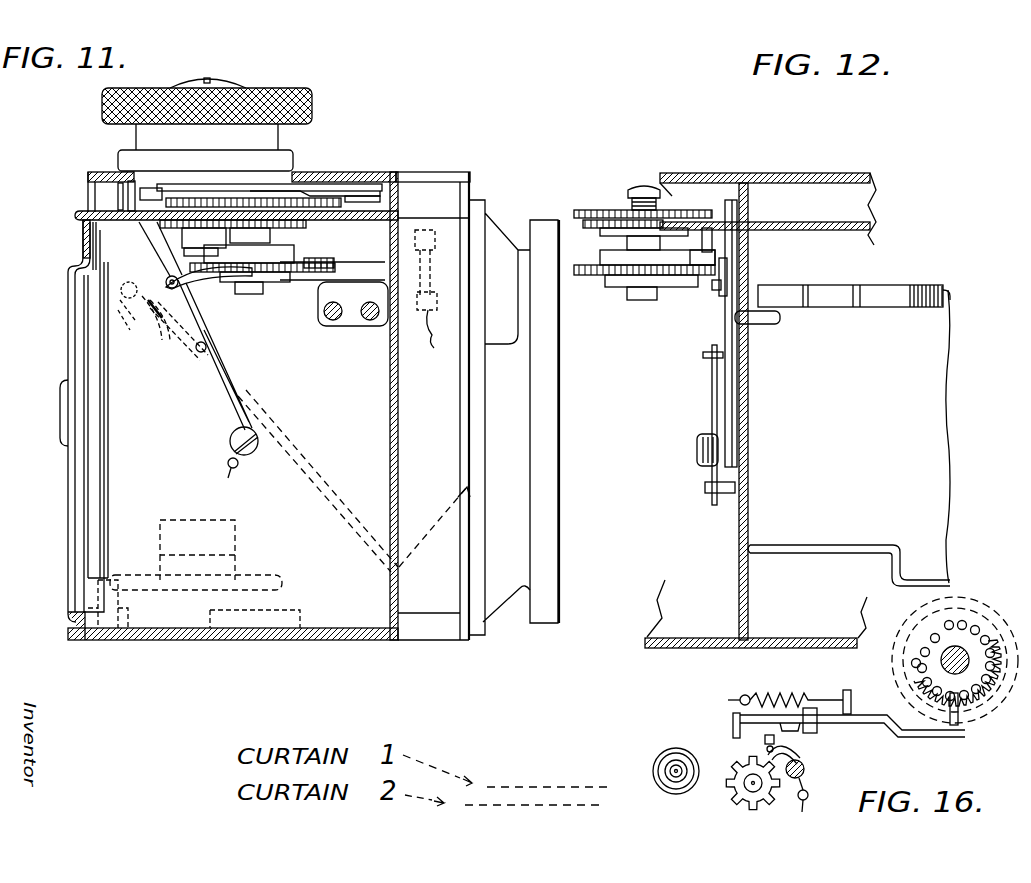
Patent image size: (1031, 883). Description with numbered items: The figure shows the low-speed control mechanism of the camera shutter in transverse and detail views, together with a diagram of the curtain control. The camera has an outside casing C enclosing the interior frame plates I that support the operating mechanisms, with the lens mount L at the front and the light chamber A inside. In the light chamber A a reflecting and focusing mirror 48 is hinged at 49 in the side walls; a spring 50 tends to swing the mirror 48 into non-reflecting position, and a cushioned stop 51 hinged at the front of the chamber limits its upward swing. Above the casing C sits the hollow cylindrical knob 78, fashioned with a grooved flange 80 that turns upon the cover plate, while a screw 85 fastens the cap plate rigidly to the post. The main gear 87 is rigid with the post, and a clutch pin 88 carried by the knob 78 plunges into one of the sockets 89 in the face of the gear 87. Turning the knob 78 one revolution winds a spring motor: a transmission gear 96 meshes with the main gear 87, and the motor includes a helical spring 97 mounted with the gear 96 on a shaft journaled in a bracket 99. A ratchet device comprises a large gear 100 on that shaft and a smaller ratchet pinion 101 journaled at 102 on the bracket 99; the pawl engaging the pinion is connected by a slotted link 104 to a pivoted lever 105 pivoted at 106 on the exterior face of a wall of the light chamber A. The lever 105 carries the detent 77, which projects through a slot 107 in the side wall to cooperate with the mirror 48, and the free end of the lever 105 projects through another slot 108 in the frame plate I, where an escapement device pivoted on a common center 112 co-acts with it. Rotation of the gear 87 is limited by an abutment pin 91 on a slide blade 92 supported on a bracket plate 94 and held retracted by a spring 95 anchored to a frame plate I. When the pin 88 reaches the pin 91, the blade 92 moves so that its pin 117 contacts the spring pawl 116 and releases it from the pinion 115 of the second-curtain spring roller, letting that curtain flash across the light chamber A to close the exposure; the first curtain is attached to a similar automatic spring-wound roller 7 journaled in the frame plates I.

In FIG. 11, the knob 78 is at (328, 70).
In FIG. 11, the screw 85 is at (226, 67).
In FIG. 11, the grooved flange 80 is at (124, 151).
In FIG. 11, the casing C is at (356, 178).
In FIG. 12, the casing C is at (780, 177).
In FIG. 11, the frame plates I is at (300, 216).
In FIG. 12, the frame plates I is at (834, 226).
In FIG. 11, the mirror hinge 49 is at (80, 292).
In FIG. 12, the mirror hinge 49 is at (837, 275).
In FIG. 11, the abutment pin 91 is at (118, 194).
In FIG. 16, the abutment pin 91 is at (947, 736).
In FIG. 11, the common center 112 is at (349, 186).
In FIG. 11, the transmission gear 96 is at (306, 224).
In FIG. 12, the transmission gear 96 is at (578, 211).
In FIG. 11, the helical spring 97 is at (295, 256).
In FIG. 12, the helical spring 97 is at (616, 236).
In FIG. 11, the large gear 100 is at (292, 288).
In FIG. 12, the large gear 100 is at (586, 282).
In FIG. 11, the ratchet pinion 101 is at (320, 275).
In FIG. 11, the bracket 99 is at (367, 318).
In FIG. 12, the bracket 99 is at (690, 278).
In FIG. 11, the slotted link 104 is at (168, 288).
In FIG. 12, the slotted link 104 is at (724, 278).
In FIG. 11, the detent 77 is at (153, 303).
In FIG. 12, the detent 77 is at (779, 322).
In FIG. 11, the pivoted lever 105 is at (214, 392).
In FIG. 12, the pivoted lever 105 is at (737, 409).
In FIG. 11, the pivot 106 is at (229, 441).
In FIG. 12, the pivot 106 is at (697, 449).
In FIG. 11, the slot 107 is at (214, 328).
In FIG. 12, the slot 107 is at (752, 330).
In FIG. 11, the cushioned stop 51 is at (425, 300).
In FIG. 11, the reflecting and focusing mirror 48 is at (326, 472).
In FIG. 12, the reflecting and focusing mirror 48 is at (849, 544).
In FIG. 11, the lens mount L is at (514, 431).
In FIG. 12, the slot 108 is at (740, 222).
In FIG. 12, the pinion journal 102 is at (658, 293).
In FIG. 12, the spring 50 is at (938, 274).
In FIG. 12, the light chamber A is at (807, 606).
In FIG. 16, the main gear 87 is at (966, 622).
In FIG. 16, the clutch pin 88 is at (954, 653).
In FIG. 16, the sockets 89 is at (911, 663).
In FIG. 16, the bracket plate 94 is at (890, 732).
In FIG. 16, the slide blade 92 is at (950, 742).
In FIG. 16, the spring 95 is at (790, 697).
In FIG. 16, the pin 117 is at (733, 730).
In FIG. 16, the spring pawl 116 is at (805, 753).
In FIG. 16, the pinion 115 is at (733, 805).
In FIG. 16, the spring-wound roller 7 is at (640, 763).